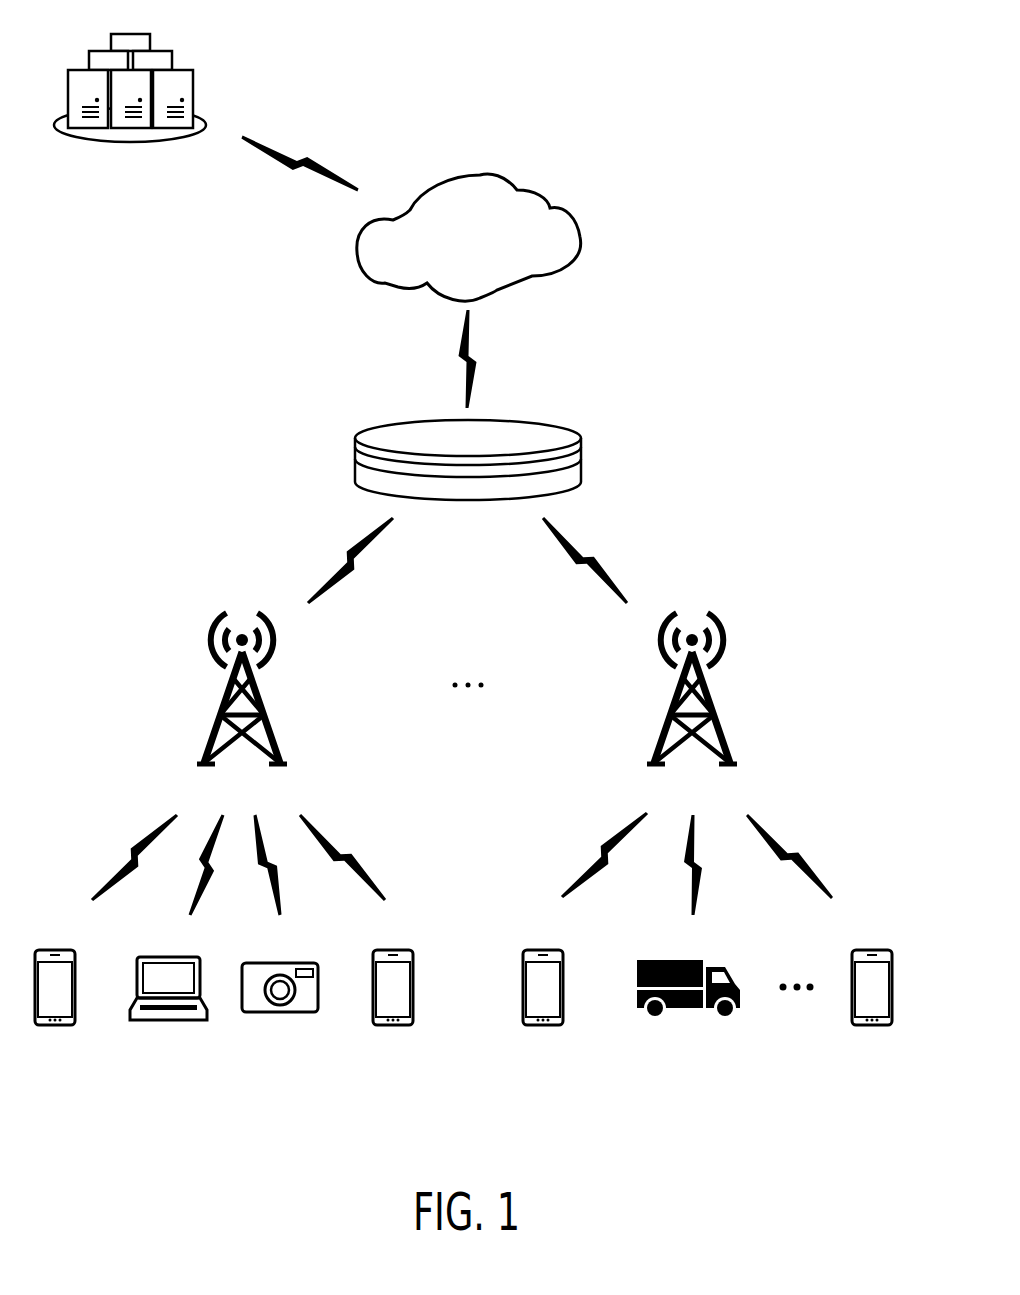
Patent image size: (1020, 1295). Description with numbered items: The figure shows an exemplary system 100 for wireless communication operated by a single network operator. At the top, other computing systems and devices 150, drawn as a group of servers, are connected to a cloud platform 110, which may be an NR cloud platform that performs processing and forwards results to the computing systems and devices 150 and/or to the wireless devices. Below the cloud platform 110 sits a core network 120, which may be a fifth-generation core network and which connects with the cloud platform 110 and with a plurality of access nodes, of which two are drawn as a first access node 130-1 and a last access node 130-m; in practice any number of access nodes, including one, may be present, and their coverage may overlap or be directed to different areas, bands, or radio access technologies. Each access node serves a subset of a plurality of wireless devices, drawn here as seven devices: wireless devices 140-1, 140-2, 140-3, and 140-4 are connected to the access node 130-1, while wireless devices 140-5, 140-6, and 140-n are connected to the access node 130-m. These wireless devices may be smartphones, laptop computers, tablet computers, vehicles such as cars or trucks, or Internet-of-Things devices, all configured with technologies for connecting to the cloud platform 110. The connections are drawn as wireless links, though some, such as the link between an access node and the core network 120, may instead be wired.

The system 100 is at (728, 92).
The cloud platform 110 is at (580, 237).
The core network 120 is at (580, 443).
The access node 130-1 is at (268, 708).
The access node 130-m is at (718, 708).
The wireless device 140-1 is at (55, 1027).
The wireless device 140-2 is at (177, 1022).
The wireless device 140-3 is at (283, 1014).
The wireless device 140-4 is at (395, 1027).
The wireless device 140-5 is at (545, 1027).
The wireless device 140-6 is at (663, 1014).
The wireless device 140-n is at (873, 1027).
The computing systems and devices 150 is at (172, 58).